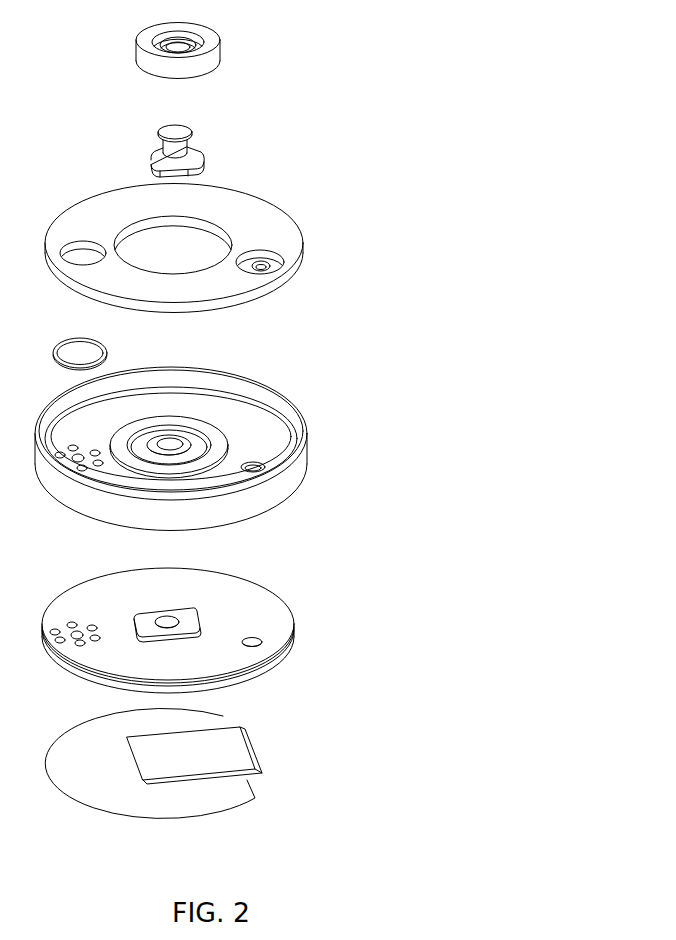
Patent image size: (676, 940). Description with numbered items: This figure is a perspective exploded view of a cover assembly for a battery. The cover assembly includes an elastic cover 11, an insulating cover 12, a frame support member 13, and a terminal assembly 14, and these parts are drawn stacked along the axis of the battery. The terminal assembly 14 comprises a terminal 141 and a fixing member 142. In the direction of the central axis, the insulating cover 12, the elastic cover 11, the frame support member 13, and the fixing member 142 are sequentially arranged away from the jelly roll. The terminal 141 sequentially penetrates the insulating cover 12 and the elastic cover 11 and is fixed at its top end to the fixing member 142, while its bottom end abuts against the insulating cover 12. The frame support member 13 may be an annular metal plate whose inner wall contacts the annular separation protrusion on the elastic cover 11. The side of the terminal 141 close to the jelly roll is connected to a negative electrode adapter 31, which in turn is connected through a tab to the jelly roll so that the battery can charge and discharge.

The elastic cover 11 is at (303, 463).
The insulating cover 12 is at (288, 617).
The frame support member 13 is at (277, 222).
The terminal assembly 14 is at (295, 37).
The terminal 141 is at (192, 132).
The fixing member 142 is at (210, 45).
The negative electrode adapter 31 is at (240, 750).